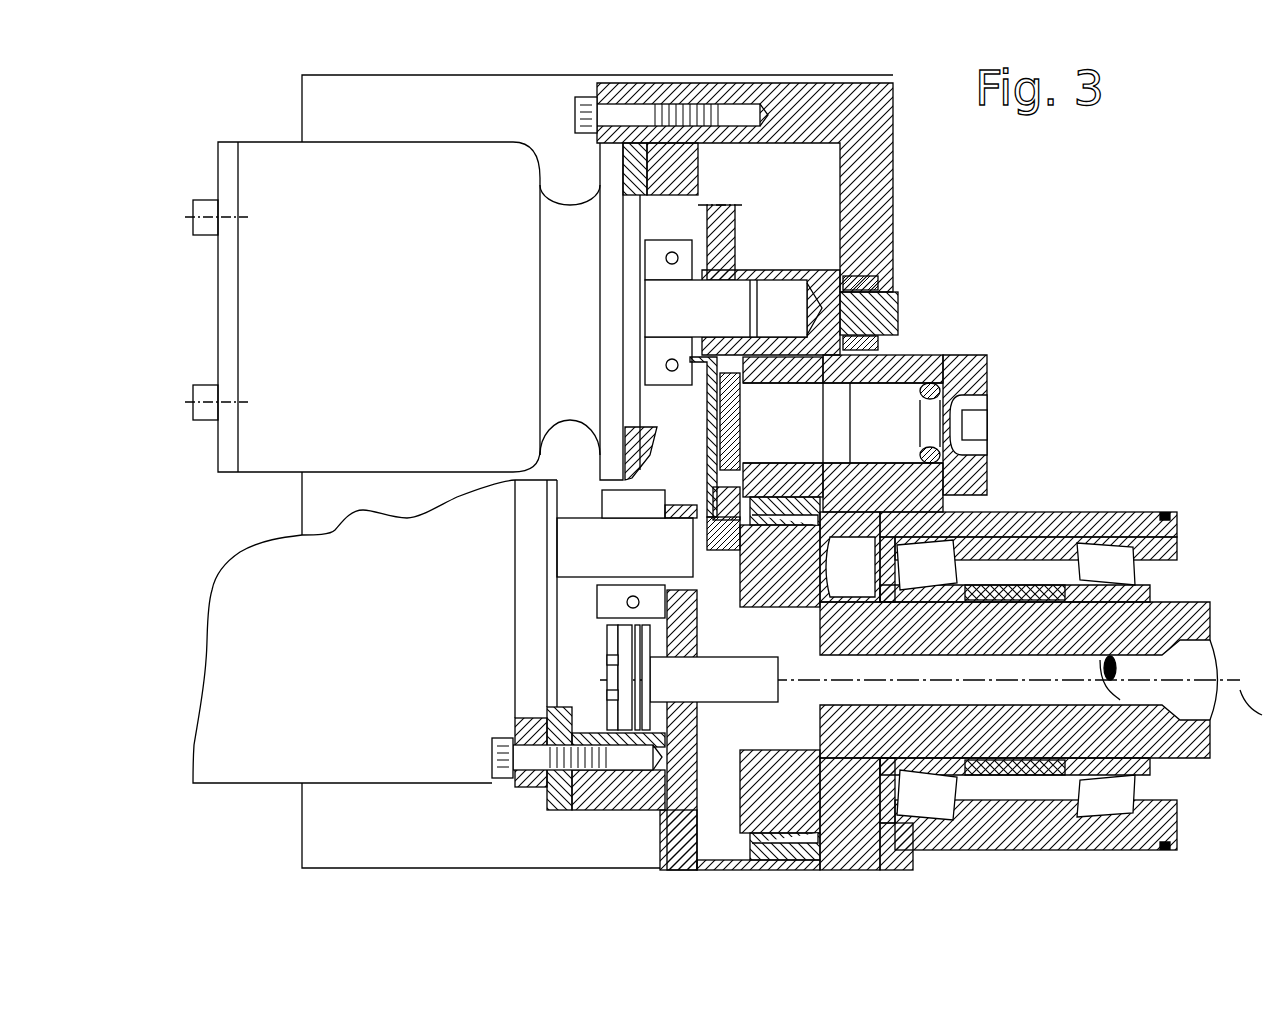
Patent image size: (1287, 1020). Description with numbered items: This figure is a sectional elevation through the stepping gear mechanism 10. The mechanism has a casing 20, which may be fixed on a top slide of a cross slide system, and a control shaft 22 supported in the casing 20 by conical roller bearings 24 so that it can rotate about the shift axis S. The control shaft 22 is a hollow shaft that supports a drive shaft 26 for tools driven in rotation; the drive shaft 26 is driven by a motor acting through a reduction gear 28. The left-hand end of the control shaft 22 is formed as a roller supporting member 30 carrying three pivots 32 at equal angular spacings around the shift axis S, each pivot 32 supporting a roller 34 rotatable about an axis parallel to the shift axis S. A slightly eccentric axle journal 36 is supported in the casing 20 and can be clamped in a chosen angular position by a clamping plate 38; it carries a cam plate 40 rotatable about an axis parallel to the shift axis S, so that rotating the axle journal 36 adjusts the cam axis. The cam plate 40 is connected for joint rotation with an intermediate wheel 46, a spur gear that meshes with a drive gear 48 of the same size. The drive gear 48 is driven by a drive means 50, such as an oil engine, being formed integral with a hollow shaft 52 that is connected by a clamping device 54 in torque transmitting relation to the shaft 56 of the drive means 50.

The stepping gear mechanism 10 is at (1043, 280).
The casing 20 is at (853, 105).
The control shaft 22 is at (1200, 742).
The conical roller bearings 24 is at (934, 790).
The drive shaft 26 is at (1093, 670).
The reduction gear 28 is at (596, 597).
The roller supporting member 30 is at (862, 832).
The pivots 32 is at (752, 800).
The rollers 34 is at (755, 625).
The axle journal 36 is at (975, 446).
The clamping plate 38 is at (972, 372).
The cam plate 40 is at (803, 487).
The intermediate wheel 46 is at (704, 436).
The drive gear 48 is at (722, 245).
The drive means 50 is at (282, 162).
The hollow shaft 52 is at (826, 288).
The clamping device 54 is at (656, 252).
The shaft 56 is at (760, 300).
The shift axis S is at (1263, 710).